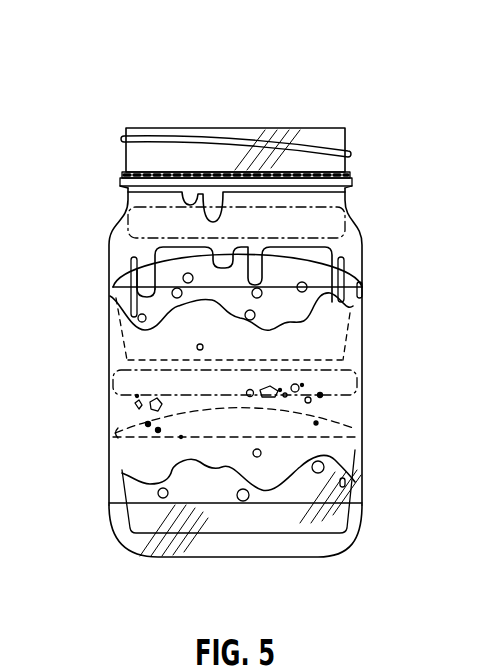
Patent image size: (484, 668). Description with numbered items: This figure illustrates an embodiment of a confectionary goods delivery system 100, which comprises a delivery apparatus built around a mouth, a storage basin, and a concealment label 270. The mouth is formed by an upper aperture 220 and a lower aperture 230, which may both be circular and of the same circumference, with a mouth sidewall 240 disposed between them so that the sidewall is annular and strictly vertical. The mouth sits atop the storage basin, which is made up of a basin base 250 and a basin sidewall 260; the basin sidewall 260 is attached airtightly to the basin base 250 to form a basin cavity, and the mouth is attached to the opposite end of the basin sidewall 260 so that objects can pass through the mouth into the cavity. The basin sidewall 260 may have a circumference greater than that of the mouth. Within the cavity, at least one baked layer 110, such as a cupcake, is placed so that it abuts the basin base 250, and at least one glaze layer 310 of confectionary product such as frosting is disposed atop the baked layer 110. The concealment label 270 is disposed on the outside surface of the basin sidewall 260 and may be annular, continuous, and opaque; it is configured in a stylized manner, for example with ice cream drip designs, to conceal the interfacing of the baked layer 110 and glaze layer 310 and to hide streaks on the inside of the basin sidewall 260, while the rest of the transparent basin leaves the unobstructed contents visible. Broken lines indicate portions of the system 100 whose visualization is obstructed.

The confectionary goods delivery system 100 is at (93, 46).
The baked layer 110 is at (130, 463).
The upper aperture 220 is at (223, 128).
The lower aperture 230 is at (352, 178).
The mouth sidewall 240 is at (126, 160).
The basin base 250 is at (300, 557).
The basin sidewall 260 is at (363, 262).
The concealment label 270 is at (118, 352).
The glaze layer 310 is at (136, 228).